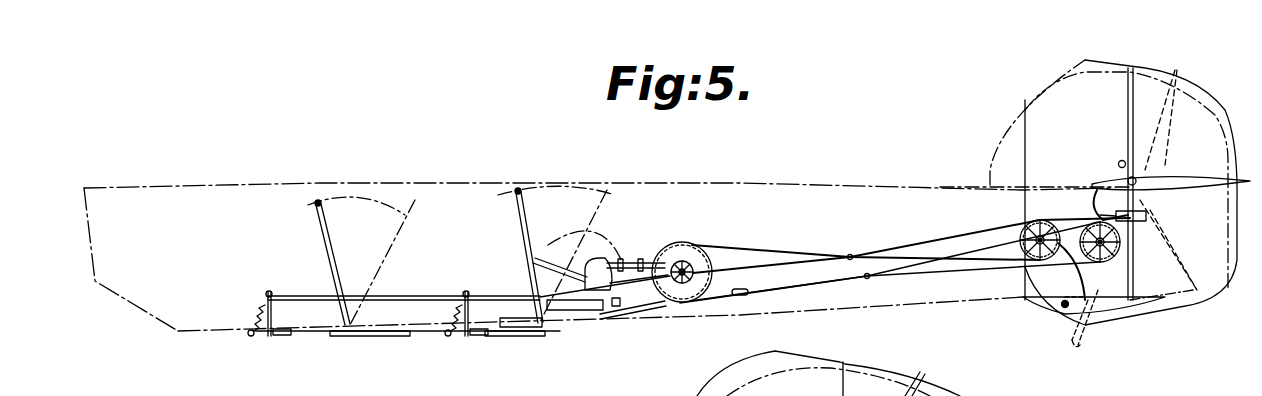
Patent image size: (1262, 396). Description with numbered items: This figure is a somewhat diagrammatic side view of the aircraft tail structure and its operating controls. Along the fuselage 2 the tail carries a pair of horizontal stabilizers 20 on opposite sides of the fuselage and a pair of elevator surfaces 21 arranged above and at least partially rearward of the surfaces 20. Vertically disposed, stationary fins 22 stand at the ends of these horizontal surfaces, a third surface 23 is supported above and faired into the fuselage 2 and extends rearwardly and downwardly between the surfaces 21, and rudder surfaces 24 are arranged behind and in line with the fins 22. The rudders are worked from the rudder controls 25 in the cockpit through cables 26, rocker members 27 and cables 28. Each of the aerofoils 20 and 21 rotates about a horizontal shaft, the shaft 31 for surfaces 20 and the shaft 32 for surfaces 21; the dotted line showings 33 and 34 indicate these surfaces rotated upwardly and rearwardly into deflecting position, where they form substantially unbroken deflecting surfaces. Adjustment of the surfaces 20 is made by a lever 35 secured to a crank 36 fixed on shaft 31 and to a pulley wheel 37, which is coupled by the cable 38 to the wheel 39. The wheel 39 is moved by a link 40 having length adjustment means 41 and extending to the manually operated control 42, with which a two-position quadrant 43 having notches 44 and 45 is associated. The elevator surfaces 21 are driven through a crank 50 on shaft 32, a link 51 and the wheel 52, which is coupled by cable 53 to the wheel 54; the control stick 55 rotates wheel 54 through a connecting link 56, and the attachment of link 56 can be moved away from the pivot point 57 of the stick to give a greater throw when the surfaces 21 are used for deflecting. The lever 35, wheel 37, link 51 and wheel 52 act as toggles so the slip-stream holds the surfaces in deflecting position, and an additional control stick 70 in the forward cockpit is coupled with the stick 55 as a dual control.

The fuselage 2 is at (835, 183).
The stabilizers 20 is at (1115, 306).
The elevator surfaces 21 is at (1200, 180).
The fins 22 is at (1062, 65).
The third surface 23 is at (1002, 134).
The rudder surfaces 24 is at (1215, 108).
The rudder controls 25 is at (468, 295).
The cables 26 is at (765, 264).
The rocker members 27 is at (1140, 225).
The cables 28 is at (1100, 215).
The shaft 31 is at (1063, 309).
The shaft 32 is at (1137, 179).
The dotted line showing 33 is at (1072, 276).
The dotted line showing 34 is at (1178, 72).
The lever 35 is at (1080, 283).
The crank 36 is at (1085, 318).
The pulley wheel 37 is at (1037, 222).
The cable 38 is at (729, 248).
The wheel 39 is at (684, 243).
The link 40 is at (646, 261).
The length adjustment means 41 is at (627, 260).
The manually operated control 42 is at (553, 272).
The two-position quadrant 43 is at (600, 262).
The notch 44 is at (596, 308).
The notch 45 is at (639, 288).
The crank 50 is at (1119, 164).
The link 51 is at (1097, 195).
The wheel 52 is at (1103, 263).
The cable 53 is at (926, 275).
The wheel 54 is at (640, 318).
The control stick 55 is at (520, 231).
The connecting link 56 is at (580, 310).
The pivot point 57 is at (552, 330).
The additional control stick 70 is at (325, 255).